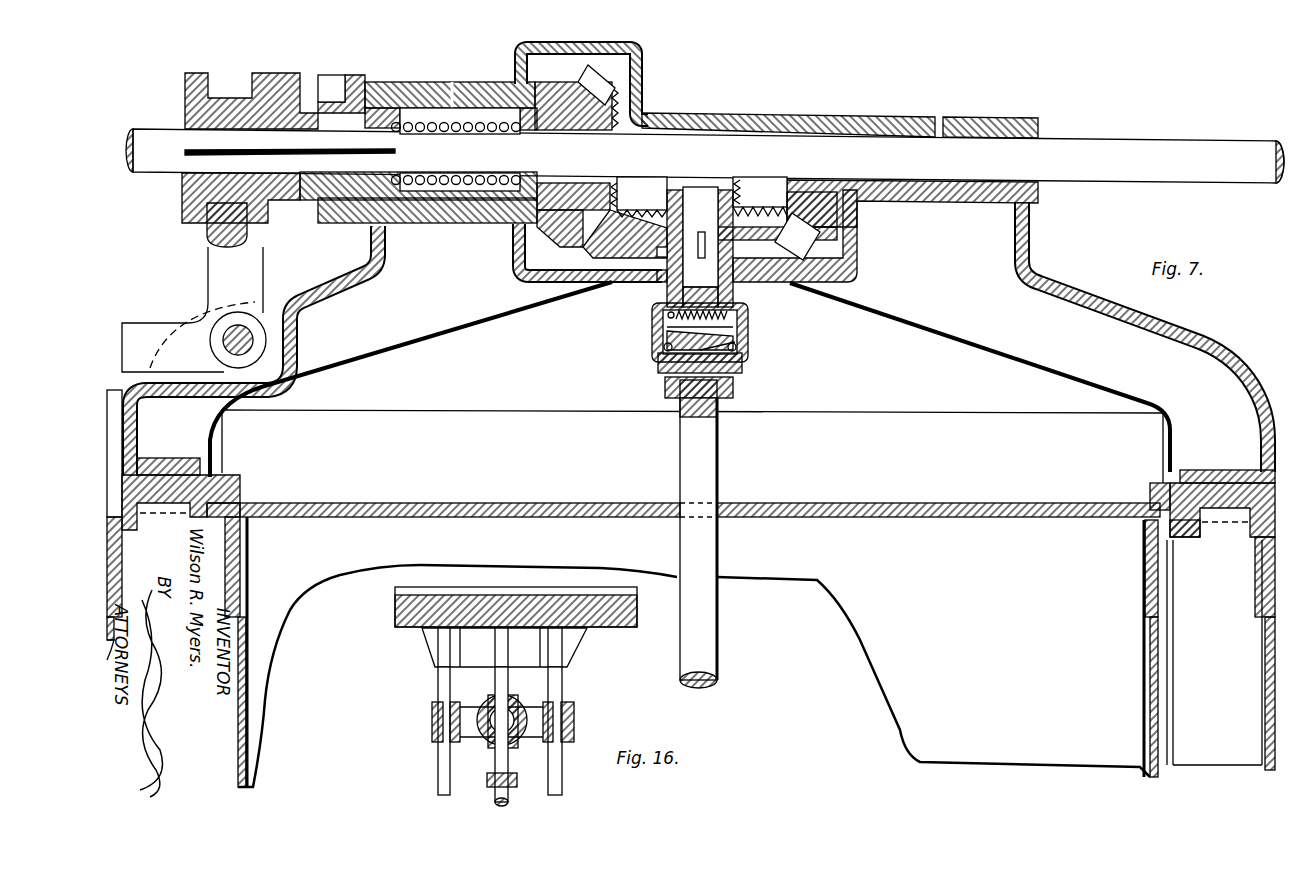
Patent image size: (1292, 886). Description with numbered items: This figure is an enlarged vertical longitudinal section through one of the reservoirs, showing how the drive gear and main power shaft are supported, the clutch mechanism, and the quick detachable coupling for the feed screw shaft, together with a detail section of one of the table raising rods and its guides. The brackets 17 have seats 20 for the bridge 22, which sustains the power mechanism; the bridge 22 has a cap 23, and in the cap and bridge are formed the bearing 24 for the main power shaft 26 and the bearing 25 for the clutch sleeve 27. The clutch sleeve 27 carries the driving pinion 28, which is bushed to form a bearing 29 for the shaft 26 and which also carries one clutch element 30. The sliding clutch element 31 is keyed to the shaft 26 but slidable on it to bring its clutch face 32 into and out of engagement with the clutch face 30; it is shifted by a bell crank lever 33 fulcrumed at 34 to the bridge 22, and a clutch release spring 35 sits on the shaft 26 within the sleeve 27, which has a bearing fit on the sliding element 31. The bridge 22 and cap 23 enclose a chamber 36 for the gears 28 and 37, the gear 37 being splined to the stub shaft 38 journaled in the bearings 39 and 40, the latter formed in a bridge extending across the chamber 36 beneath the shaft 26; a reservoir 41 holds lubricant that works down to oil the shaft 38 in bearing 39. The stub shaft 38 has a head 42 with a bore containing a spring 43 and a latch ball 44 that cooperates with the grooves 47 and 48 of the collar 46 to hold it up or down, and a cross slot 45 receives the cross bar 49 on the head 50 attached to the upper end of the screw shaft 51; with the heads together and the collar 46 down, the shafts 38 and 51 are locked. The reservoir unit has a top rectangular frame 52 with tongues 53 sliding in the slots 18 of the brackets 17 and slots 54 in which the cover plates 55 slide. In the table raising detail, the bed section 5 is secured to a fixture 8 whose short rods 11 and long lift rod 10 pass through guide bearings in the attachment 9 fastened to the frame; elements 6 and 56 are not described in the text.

In FIG. 16, the bed section 5 is at (410, 628).
In FIG. 16, the plate 6 is at (395, 597).
In FIG. 16, the fixture 8 is at (432, 646).
In FIG. 16, the attachment 9 is at (556, 720).
In FIG. 16, the lift rod 10 is at (508, 766).
In FIG. 16, the rods 11 is at (438, 678).
In FIG. 7, the bracket 17 is at (691, 643).
In FIG. 7, the slot 18 is at (186, 531).
In FIG. 7, the seat 20 is at (222, 478).
In FIG. 7, the bridge 22 is at (687, 348).
In FIG. 7, the cap 23 is at (710, 116).
In FIG. 7, the bearing 24 is at (968, 118).
In FIG. 7, the bearing 25 is at (481, 208).
In FIG. 7, the main power shaft 26 is at (705, 156).
In FIG. 7, the clutch sleeve 27 is at (447, 202).
In FIG. 7, the driving pinion 28 is at (561, 221).
In FIG. 7, the bearing 29 is at (603, 133).
In FIG. 7, the clutch element 30 is at (351, 77).
In FIG. 7, the sliding clutch element 31 is at (386, 150).
In FIG. 7, the clutch face 32 is at (297, 78).
In FIG. 7, the bell crank lever 33 is at (192, 287).
In FIG. 7, the fulcrum 34 is at (238, 328).
In FIG. 7, the clutch release spring 35 is at (468, 136).
In FIG. 7, the chamber 36 is at (724, 208).
In FIG. 7, the gear 37 is at (818, 240).
In FIG. 7, the stub shaft 38 is at (700, 237).
In FIG. 7, the bearing 39 is at (736, 292).
In FIG. 7, the bearing 40 is at (745, 205).
In FIG. 7, the lubricant reservoir 41 is at (660, 270).
In FIG. 7, the head 42 is at (748, 318).
In FIG. 7, the spring 43 is at (660, 347).
In FIG. 7, the latch ball 44 is at (655, 315).
In FIG. 7, the cross slot 45 is at (745, 355).
In FIG. 7, the collar 46 is at (660, 327).
In FIG. 7, the groove 47 is at (735, 340).
In FIG. 7, the groove 48 is at (660, 358).
In FIG. 7, the cross bar 49 is at (737, 345).
In FIG. 7, the coupling head 50 is at (736, 390).
In FIG. 7, the screw shaft 51 is at (680, 418).
In FIG. 7, the top rectangular frame 52 is at (1146, 567).
In FIG. 7, the tongue 53 is at (244, 498).
In FIG. 7, the slot 54 is at (242, 536).
In FIG. 7, the cover plate 55 is at (614, 507).
In FIG. 7, the cylinder 56 is at (248, 758).